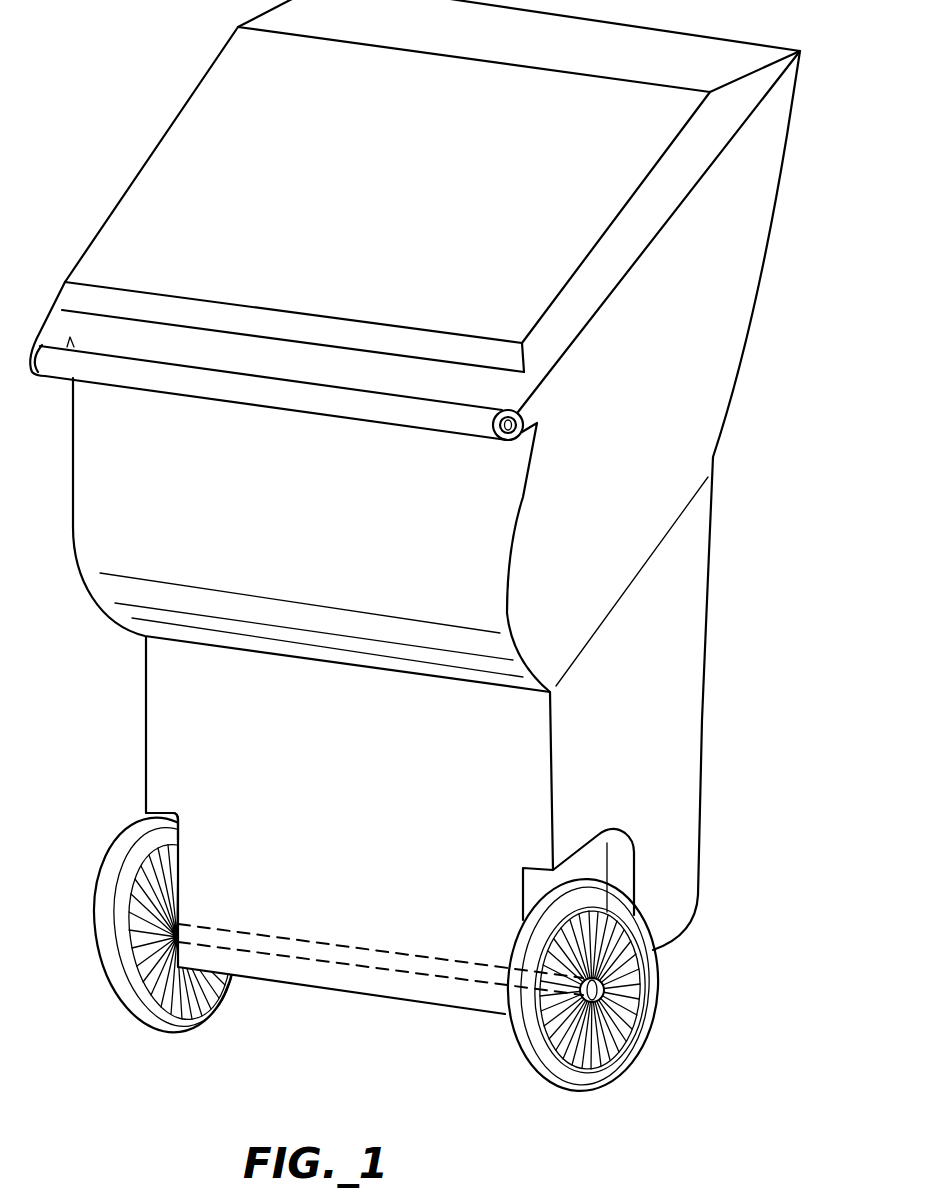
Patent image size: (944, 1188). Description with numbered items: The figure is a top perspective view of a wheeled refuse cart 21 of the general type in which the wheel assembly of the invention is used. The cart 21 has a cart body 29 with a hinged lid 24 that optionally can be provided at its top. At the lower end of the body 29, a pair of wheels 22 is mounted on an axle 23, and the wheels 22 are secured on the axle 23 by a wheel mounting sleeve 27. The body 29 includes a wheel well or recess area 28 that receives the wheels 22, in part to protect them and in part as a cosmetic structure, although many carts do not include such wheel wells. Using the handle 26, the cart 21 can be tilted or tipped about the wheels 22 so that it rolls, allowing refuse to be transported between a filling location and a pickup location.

The cart 21 is at (742, 388).
The wheels 22 is at (178, 1030).
The axle 23 is at (328, 940).
The hinged lid 24 is at (147, 172).
The handle 26 is at (243, 398).
The wheel mounting sleeve 27 is at (605, 995).
The wheel well 28 is at (147, 817).
The cart body 29 is at (693, 645).